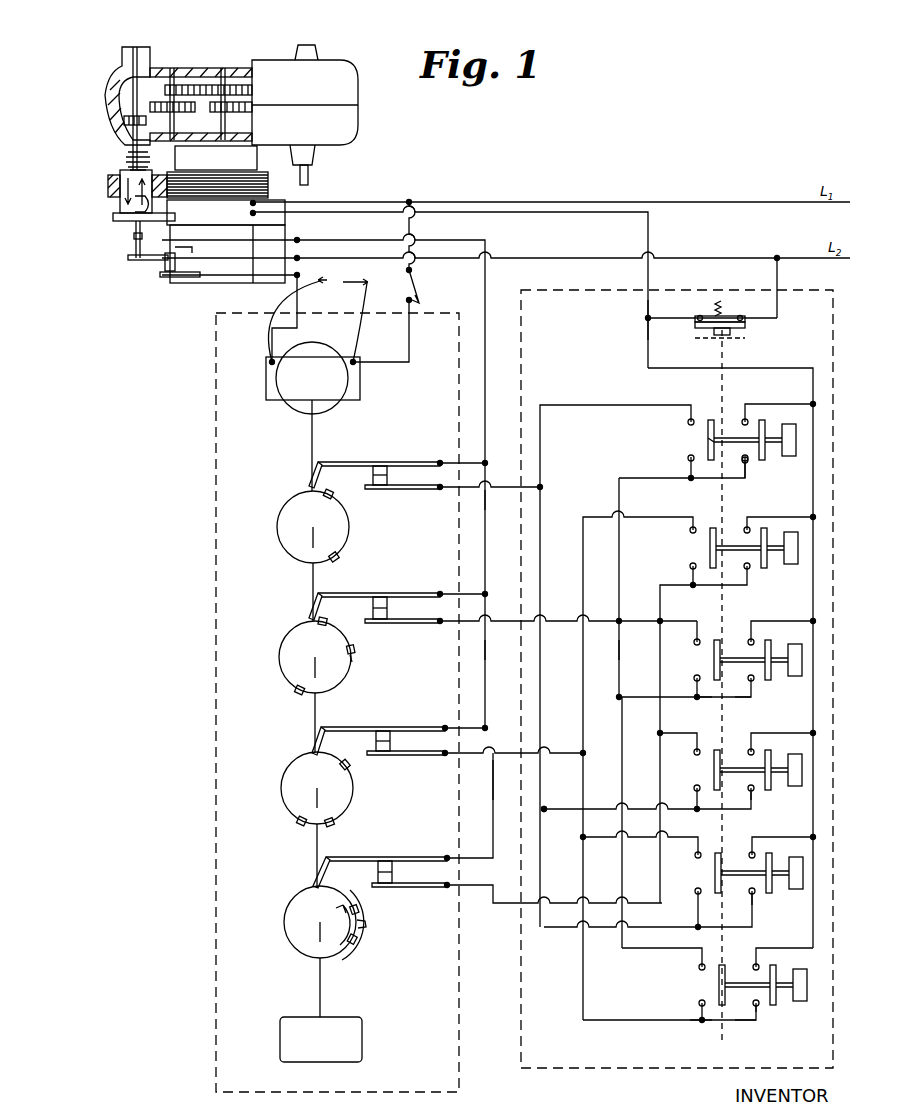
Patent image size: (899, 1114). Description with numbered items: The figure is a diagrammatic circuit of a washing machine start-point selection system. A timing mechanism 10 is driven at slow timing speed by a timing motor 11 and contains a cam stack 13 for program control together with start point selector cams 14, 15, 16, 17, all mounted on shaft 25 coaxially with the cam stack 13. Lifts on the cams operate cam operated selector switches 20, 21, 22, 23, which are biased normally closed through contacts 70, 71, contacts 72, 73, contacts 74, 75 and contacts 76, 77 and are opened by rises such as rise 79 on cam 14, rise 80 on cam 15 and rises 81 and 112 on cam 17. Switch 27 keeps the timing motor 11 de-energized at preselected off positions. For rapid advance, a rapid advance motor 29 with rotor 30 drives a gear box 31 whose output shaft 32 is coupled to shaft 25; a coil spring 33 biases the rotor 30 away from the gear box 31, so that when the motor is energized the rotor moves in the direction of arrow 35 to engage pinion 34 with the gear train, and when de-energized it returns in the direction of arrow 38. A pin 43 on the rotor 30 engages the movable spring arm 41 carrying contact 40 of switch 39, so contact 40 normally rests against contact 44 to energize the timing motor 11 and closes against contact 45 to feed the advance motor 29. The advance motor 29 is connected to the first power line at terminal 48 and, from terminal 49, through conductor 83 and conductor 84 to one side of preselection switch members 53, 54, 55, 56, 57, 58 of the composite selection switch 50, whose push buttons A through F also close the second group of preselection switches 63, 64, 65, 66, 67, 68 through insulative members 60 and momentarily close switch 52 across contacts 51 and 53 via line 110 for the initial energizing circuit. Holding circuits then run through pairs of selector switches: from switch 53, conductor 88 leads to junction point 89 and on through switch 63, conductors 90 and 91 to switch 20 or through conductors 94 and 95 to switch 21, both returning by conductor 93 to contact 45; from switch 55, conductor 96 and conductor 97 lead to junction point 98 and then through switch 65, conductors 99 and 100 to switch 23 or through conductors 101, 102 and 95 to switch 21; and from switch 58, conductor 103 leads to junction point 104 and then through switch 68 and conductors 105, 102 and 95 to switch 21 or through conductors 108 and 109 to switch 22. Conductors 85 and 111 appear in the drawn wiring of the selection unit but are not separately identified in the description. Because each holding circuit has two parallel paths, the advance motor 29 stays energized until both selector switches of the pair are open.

The timing mechanism 10 is at (216, 830).
The timing motor 11 is at (266, 380).
The cam stack 13 is at (362, 1040).
The start point selector cam 14 is at (278, 527).
The selector cam 15 is at (279, 652).
The selector cam 16 is at (280, 787).
The selector cam 17 is at (283, 918).
The selector switch 20 is at (405, 460).
The selector switch 21 is at (405, 590).
The selector switch 22 is at (407, 723).
The selector switch 23 is at (412, 855).
The shaft 25 is at (305, 433).
The switch 27 is at (413, 290).
The rapid advance motor 29 is at (240, 156).
The rotor 30 is at (120, 184).
The gear box 31 is at (273, 60).
The output shaft 32 is at (312, 178).
The coil spring 33 is at (130, 160).
The pinion 34 is at (128, 116).
The arrow 35 is at (140, 212).
The arrow 38 is at (135, 200).
The switch 39 is at (173, 295).
The contact 40 is at (163, 265).
The movable spring arm 41 is at (210, 265).
The pin 43 is at (132, 235).
The contact 44 is at (170, 277).
The contact 45 is at (182, 252).
The terminal 48 is at (258, 203).
The terminal 49 is at (258, 213).
The composite selection switch 50 is at (521, 1028).
The contact 51 is at (705, 315).
The switch 52 is at (730, 335).
The preselection switch member 53 is at (742, 315).
The preselection switch member 54 is at (767, 570).
The preselection switch member 55 is at (767, 680).
The preselection switch member 56 is at (773, 792).
The preselection switch member 57 is at (773, 893).
The preselection switch member 58 is at (771, 1005).
The insulative member 60 is at (722, 435).
The preselection switch 63 is at (707, 440).
The preselection switch 64 is at (709, 548).
The preselection switch 65 is at (711, 660).
The preselection switch 66 is at (711, 770).
The preselection switch 67 is at (713, 873).
The preselection switch member 68 is at (717, 985).
The contact 70 is at (380, 466).
The contact 71 is at (381, 489).
The contact 72 is at (380, 597).
The contact 73 is at (383, 623).
The contact 74 is at (383, 731).
The contact 75 is at (386, 755).
The contact 76 is at (385, 861).
The contact 77 is at (388, 887).
The rise 79 is at (312, 476).
The rise 80 is at (352, 660).
The rise 81 is at (365, 925).
The conductor 83 is at (648, 305).
The conductor 84 is at (813, 392).
The conductor 85 is at (762, 404).
The conductor 88 is at (747, 480).
The junction point 89 is at (700, 478).
The conductor 90 is at (595, 405).
The conductor 91 is at (487, 500).
The conductor 93 is at (487, 350).
The conductor 94 is at (618, 555).
The conductor 95 is at (487, 650).
The conductor 96 is at (752, 622).
The conductor 97 is at (745, 698).
The junction point 98 is at (705, 698).
The conductor 99 is at (668, 615).
The conductor 100 is at (503, 905).
The conductor 101 is at (648, 700).
The conductor 102 is at (619, 645).
The conductor 103 is at (745, 1022).
The junction point 104 is at (700, 1025).
The conductor 105 is at (672, 950).
The conductor 108 is at (583, 1018).
The conductor 109 is at (506, 760).
The line 110 is at (672, 318).
The conductor 111 is at (777, 280).
The rise 112 is at (358, 904).